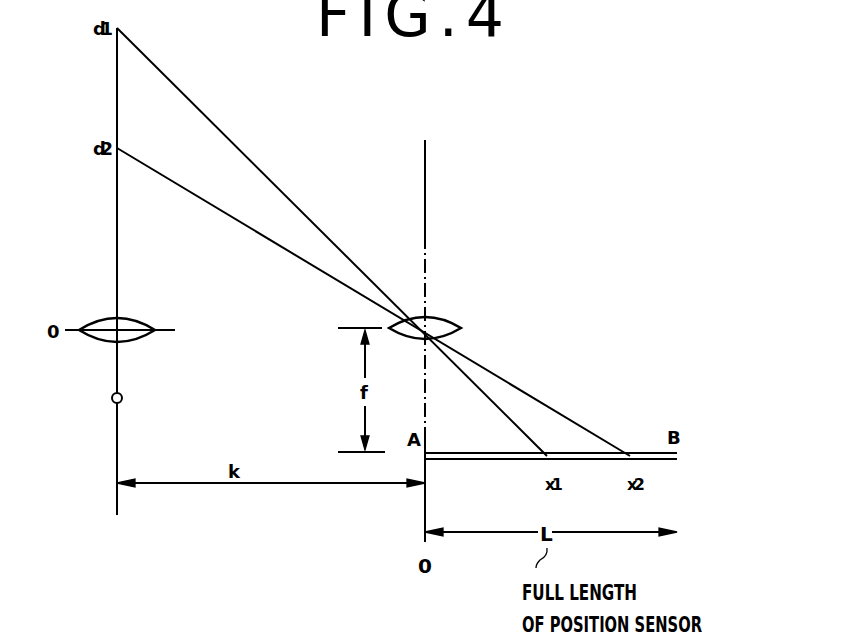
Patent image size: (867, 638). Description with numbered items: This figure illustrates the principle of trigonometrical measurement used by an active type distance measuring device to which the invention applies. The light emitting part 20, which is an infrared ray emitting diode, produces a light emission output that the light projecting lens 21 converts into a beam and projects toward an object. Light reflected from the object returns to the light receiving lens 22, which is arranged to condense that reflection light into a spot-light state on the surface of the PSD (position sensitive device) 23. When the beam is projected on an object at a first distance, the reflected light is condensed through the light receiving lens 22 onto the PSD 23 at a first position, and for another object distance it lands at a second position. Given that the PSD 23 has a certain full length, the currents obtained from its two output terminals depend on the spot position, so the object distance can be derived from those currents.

The light emitting part 20 is at (123, 396).
The light projecting lens 21 is at (135, 318).
The light receiving lens 22 is at (440, 318).
The PSD (position sensitive device) 23 is at (680, 456).